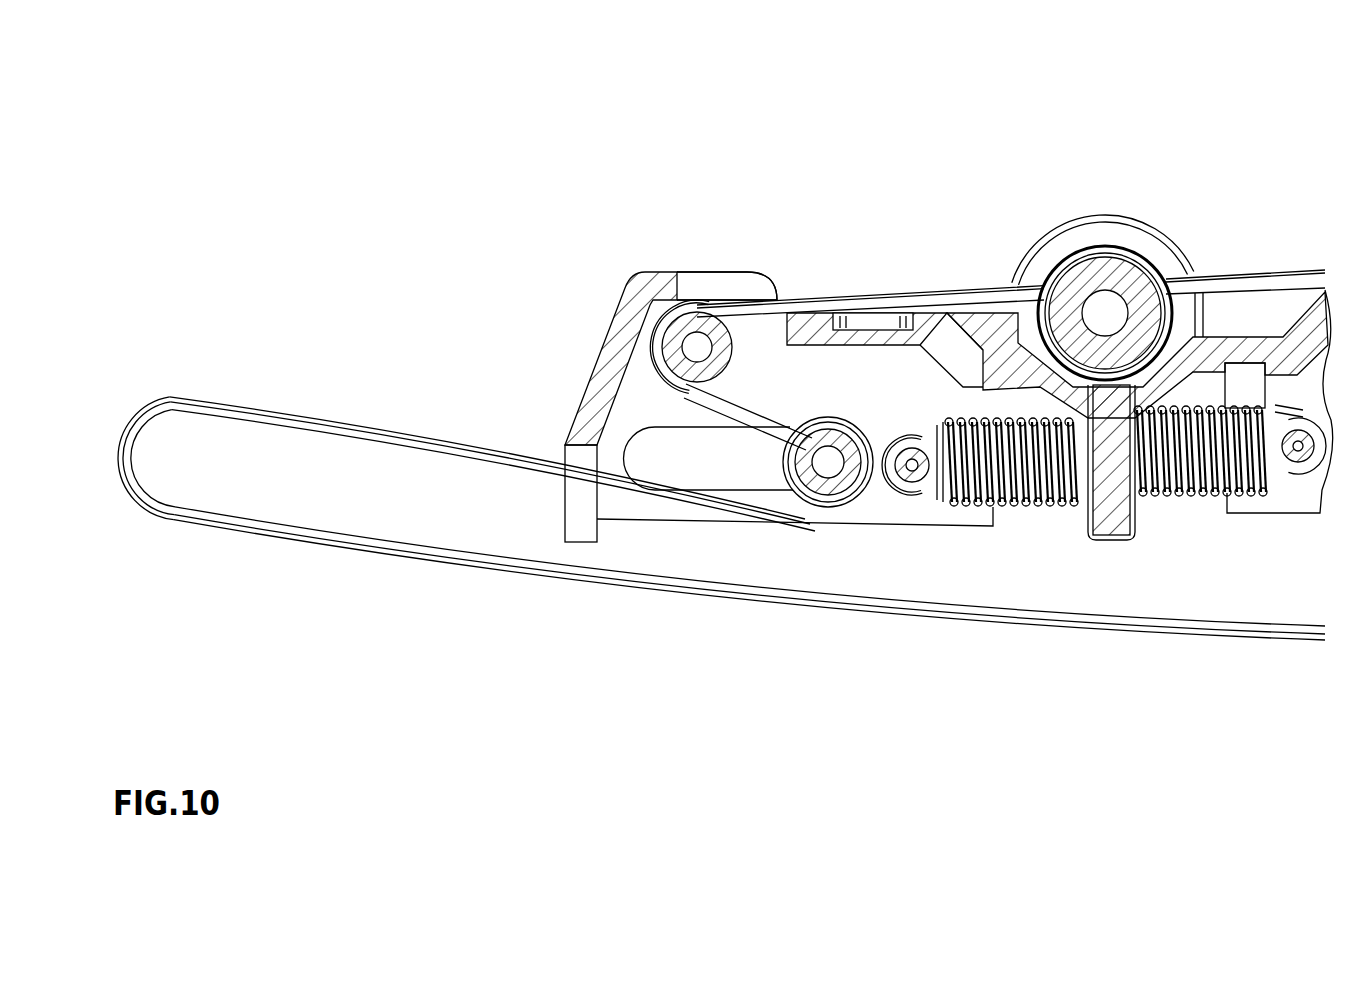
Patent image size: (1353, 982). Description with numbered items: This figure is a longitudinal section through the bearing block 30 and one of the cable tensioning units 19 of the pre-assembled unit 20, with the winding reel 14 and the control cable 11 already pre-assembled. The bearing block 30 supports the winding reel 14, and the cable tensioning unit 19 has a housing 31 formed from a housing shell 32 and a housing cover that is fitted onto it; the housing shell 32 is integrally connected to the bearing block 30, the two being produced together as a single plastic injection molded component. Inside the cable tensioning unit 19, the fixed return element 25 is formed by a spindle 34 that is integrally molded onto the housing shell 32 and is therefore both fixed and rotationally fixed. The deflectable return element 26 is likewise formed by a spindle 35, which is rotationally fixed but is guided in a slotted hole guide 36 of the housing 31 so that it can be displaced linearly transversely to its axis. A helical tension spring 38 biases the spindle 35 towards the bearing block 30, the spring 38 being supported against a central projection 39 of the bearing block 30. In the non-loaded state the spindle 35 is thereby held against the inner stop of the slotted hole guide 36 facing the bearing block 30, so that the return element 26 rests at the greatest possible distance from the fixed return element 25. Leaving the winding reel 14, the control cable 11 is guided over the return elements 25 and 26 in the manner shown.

The control cable 11 is at (222, 410).
The winding reel 14 is at (1090, 272).
The cable tensioning unit 19 is at (571, 286).
The pre-assembled unit 20 is at (377, 166).
The fixed return element 25 is at (702, 336).
The deflectable return element 26 is at (835, 442).
The bearing block 30 is at (1132, 238).
The housing 31 is at (653, 270).
The housing shell 32 is at (727, 286).
The spindle 34 is at (731, 375).
The spindle 35 is at (828, 462).
The slotted hole guide 36 is at (655, 426).
The helical tension spring 38 is at (1033, 507).
The central projection 39 is at (1112, 541).